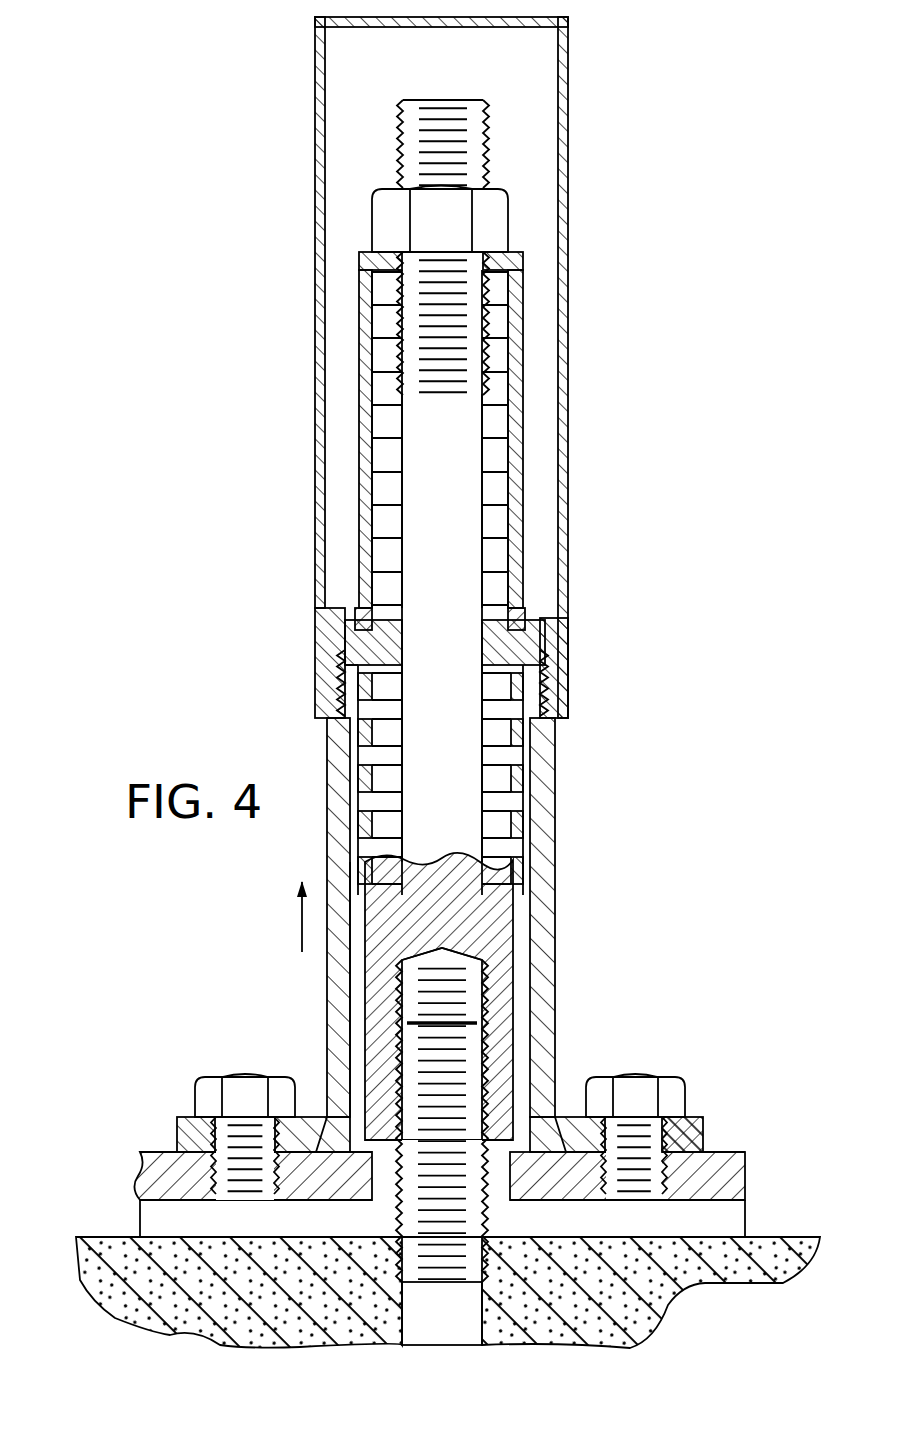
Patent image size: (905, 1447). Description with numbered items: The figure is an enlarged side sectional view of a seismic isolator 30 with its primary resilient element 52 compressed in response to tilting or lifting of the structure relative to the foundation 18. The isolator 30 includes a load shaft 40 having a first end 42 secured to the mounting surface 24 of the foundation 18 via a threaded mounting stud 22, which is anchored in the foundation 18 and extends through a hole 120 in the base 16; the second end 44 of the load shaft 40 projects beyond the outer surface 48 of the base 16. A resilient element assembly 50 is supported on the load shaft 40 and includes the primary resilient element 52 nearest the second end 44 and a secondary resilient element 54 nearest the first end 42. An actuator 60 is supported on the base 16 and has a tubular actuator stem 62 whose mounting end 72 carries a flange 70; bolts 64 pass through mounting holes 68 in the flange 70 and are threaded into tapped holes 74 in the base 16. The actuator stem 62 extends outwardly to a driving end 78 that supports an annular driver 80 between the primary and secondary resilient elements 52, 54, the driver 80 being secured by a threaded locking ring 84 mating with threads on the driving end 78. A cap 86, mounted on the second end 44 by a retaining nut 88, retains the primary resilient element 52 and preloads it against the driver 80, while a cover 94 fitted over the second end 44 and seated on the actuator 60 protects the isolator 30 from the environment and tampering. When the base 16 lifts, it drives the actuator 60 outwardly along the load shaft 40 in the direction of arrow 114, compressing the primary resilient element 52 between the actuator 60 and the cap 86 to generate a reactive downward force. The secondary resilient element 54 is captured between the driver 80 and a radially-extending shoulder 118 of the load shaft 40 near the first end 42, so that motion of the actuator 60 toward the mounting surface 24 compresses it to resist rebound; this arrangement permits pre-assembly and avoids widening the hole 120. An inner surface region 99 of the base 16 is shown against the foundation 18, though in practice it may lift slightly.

The seismic isolator 30 is at (642, 289).
The cover 94 is at (318, 197).
The second end 44 is at (392, 473).
The load shaft 40 is at (420, 463).
The retaining nut 88 is at (383, 200).
The cap 86 is at (520, 257).
The primary resilient element 52 is at (522, 372).
The annular driver 80 is at (358, 612).
The threaded locking ring 84 is at (345, 643).
The driving end 78 is at (333, 682).
The actuator 60 is at (296, 704).
The tubular actuator stem 62 is at (552, 895).
The resilient element assembly 50 is at (493, 780).
The secondary resilient element 54 is at (520, 818).
The first end 42 is at (518, 979).
The mounting stud 22 is at (472, 1108).
The radially-extending shoulder 118 is at (358, 888).
The arrow 114 is at (302, 925).
The mounting end 72 is at (318, 1135).
The bolt 64 is at (212, 1082).
The mounting hole 68 is at (242, 1128).
The flange 70 is at (212, 1140).
The tapped hole 74 is at (210, 1170).
The outer surface 48 is at (728, 1148).
The base 16 is at (735, 1172).
The foundation 18 is at (790, 1250).
The mounting surface 24 is at (98, 1232).
The hole 120 is at (382, 1192).
The inner surface region 99 is at (684, 1206).